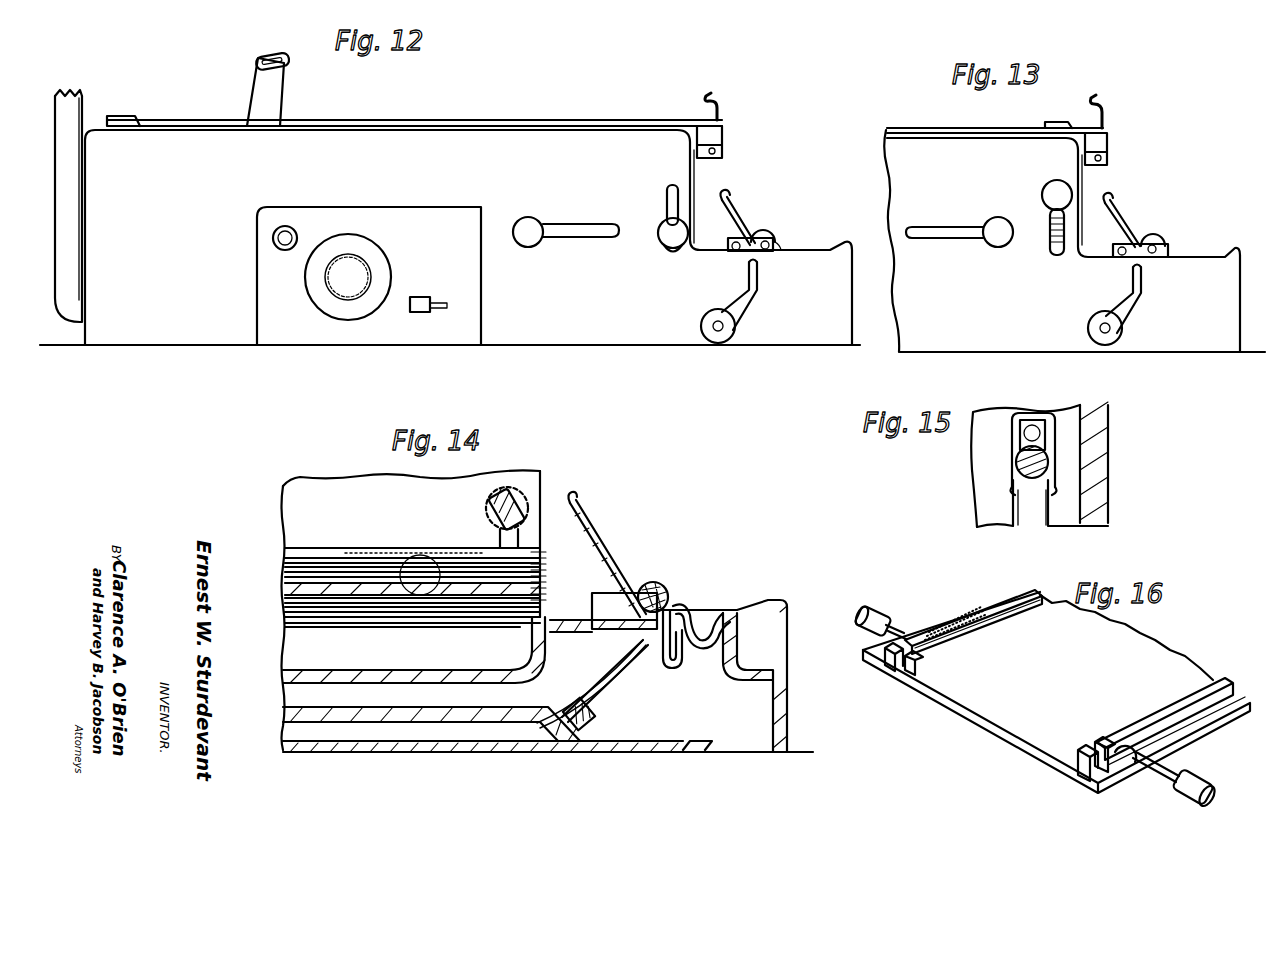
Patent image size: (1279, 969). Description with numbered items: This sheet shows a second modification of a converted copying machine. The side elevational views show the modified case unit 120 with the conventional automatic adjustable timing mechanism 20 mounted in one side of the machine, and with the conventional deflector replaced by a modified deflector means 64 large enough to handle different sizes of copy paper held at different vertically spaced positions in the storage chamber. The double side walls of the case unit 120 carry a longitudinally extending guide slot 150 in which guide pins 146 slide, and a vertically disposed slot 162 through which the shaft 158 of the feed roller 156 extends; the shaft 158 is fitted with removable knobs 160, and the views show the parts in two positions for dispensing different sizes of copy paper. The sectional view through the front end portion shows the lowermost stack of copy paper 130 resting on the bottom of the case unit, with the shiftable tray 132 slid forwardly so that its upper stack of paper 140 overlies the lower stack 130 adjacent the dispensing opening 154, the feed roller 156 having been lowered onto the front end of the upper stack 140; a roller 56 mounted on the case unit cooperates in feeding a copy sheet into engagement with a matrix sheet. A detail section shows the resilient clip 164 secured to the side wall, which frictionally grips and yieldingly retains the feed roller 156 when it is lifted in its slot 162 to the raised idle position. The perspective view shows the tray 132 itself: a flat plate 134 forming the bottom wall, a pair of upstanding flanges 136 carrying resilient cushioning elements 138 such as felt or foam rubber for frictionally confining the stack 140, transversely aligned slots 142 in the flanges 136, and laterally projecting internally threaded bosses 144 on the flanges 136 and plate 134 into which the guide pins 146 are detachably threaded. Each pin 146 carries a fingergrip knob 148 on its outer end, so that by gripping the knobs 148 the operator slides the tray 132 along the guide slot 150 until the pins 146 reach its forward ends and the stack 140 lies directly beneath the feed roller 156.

In FIG. 12, the automatic adjustable timing mechanism 20 is at (417, 222).
In FIG. 14, the roller 56 is at (670, 598).
In FIG. 12, the modified deflector means 64 is at (737, 231).
In FIG. 13, the modified deflector means 64 is at (1119, 226).
In FIG. 14, the modified deflector means 64 is at (588, 533).
In FIG. 12, the case unit 120 is at (697, 182).
In FIG. 14, the lowermost stack of copy paper 130 is at (365, 605).
In FIG. 14, the shiftable tray 132 is at (282, 592).
In FIG. 16, the shiftable tray 132 is at (955, 616).
In FIG. 16, the flat plate 134 is at (988, 705).
In FIG. 16, the upstanding flanges 136 is at (1213, 693).
In FIG. 16, the cushioning elements 138 is at (990, 628).
In FIG. 14, the stack of paper 140 is at (320, 560).
In FIG. 16, the transversely aligned slots 142 is at (912, 660).
In FIG. 16, the internally threaded bosses 144 is at (1126, 744).
In FIG. 16, the guide pins 146 is at (1178, 768).
In FIG. 12, the fingergrip knob 148 is at (528, 243).
In FIG. 13, the fingergrip knob 148 is at (993, 222).
In FIG. 16, the fingergrip knob 148 is at (1202, 789).
In FIG. 12, the guide slot 150 is at (560, 222).
In FIG. 13, the guide slot 150 is at (945, 233).
In FIG. 14, the guide slot 150 is at (377, 560).
In FIG. 14, the dispensing opening 154 is at (551, 622).
In FIG. 14, the feed roller 156 is at (498, 505).
In FIG. 15, the feed roller 156 is at (1022, 461).
In FIG. 14, the shaft 158 is at (543, 500).
In FIG. 13, the removable knobs 160 is at (1052, 190).
In FIG. 12, the vertically disposed slot 162 is at (667, 200).
In FIG. 13, the vertically disposed slot 162 is at (1052, 240).
In FIG. 14, the vertically disposed slot 162 is at (505, 548).
In FIG. 15, the vertically disposed slot 162 is at (1044, 524).
In FIG. 15, the resilient clips 164 is at (1040, 403).